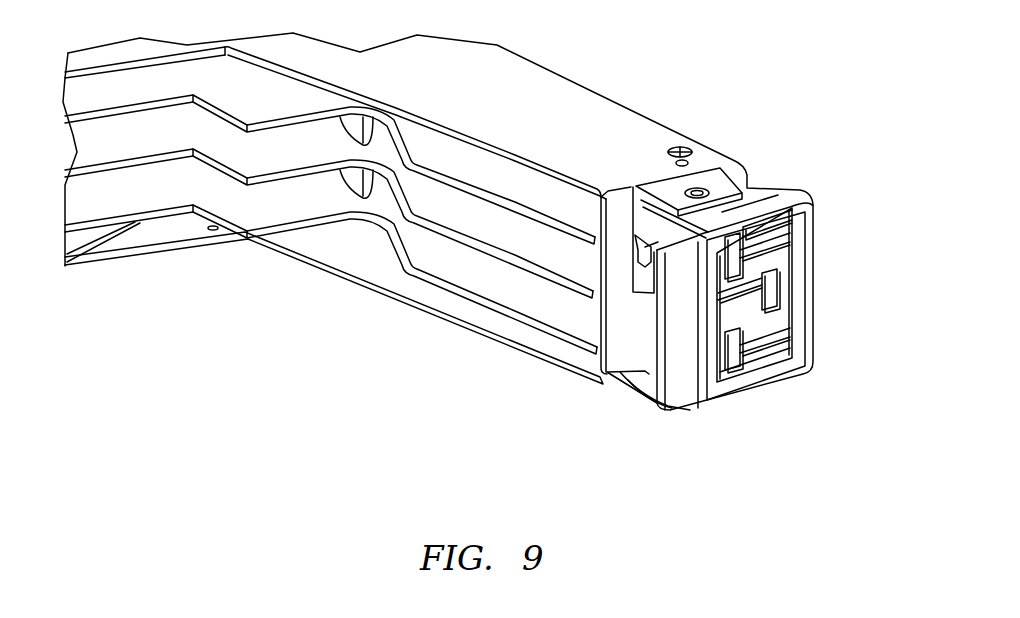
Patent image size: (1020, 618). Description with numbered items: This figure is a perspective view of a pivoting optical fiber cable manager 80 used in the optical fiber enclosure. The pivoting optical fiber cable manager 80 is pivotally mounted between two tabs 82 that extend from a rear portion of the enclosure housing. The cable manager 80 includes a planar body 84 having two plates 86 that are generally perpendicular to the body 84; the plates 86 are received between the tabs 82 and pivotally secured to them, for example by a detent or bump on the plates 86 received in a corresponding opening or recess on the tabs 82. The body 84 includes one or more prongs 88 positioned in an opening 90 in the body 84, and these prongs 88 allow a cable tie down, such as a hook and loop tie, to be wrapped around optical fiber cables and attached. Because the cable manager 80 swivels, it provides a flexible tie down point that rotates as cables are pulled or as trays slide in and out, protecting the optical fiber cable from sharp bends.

The pivoting optical fiber cable manager 80 is at (479, 255).
The tabs 82 is at (692, 182).
The planar body 84 is at (751, 325).
The plates 86 is at (758, 200).
The prongs 88 is at (762, 343).
The opening 90 is at (773, 268).